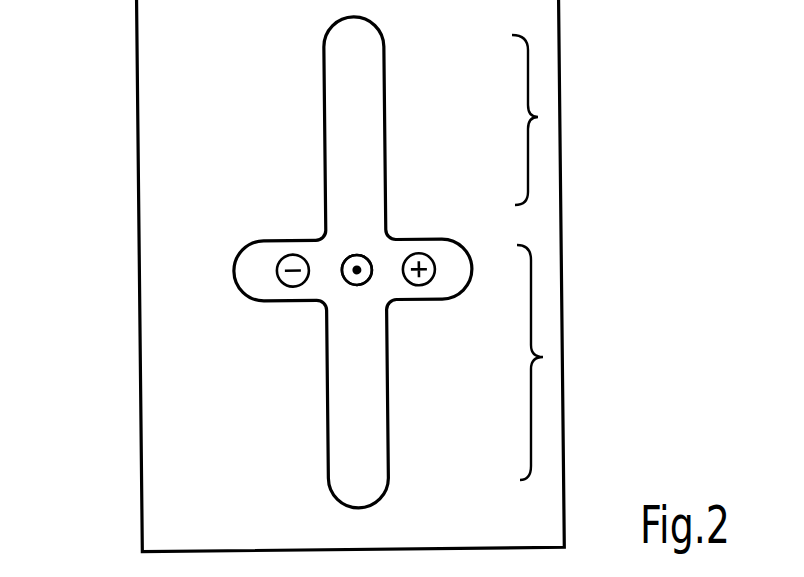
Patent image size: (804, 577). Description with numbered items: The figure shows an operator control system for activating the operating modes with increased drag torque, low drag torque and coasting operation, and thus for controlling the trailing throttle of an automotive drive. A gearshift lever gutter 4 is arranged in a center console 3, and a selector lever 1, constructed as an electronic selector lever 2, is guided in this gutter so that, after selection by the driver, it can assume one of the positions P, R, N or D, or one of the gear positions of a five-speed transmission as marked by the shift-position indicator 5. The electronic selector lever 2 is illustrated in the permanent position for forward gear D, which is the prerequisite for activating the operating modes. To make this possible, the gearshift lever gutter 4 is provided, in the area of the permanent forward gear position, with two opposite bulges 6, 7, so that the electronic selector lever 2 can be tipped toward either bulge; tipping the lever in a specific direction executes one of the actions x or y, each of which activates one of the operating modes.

The selector lever 1 is at (352, 265).
The electronic selector lever 2 is at (357, 270).
The center console 3 is at (183, 127).
The gearshift lever gutter 4 is at (337, 111).
The shift-position indicator 5 is at (541, 117).
The bulge 6 is at (275, 280).
The bulge 7 is at (440, 245).